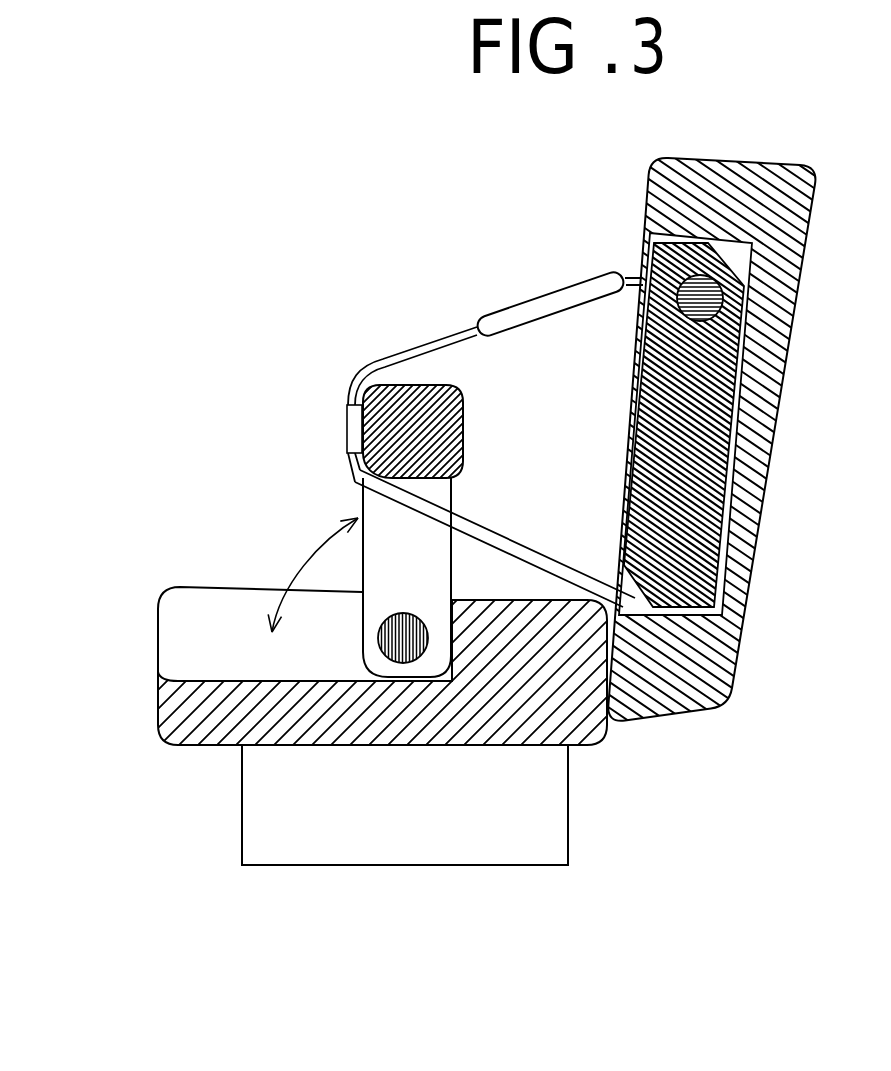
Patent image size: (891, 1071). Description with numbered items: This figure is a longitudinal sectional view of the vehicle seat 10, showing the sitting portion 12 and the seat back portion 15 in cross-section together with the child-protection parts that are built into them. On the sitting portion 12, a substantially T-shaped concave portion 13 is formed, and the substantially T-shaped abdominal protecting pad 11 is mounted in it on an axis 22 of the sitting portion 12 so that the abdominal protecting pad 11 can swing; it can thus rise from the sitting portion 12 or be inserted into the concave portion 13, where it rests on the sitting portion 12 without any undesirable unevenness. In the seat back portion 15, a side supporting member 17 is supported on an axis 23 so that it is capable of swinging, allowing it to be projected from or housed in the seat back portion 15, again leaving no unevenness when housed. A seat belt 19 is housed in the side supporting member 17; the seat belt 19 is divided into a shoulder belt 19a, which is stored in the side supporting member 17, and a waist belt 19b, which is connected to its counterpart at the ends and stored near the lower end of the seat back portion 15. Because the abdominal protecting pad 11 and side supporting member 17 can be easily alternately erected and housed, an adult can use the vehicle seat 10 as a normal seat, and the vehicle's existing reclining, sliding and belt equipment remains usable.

The vehicle seat 10 is at (373, 262).
The abdominal protecting pad 11 is at (403, 407).
The sitting portion 12 is at (253, 587).
The concave portion 13 is at (213, 630).
The seat back portion 15 is at (647, 212).
The side supporting member 17 is at (675, 502).
The seat belt 19 is at (458, 328).
The shoulder belt 19a is at (558, 285).
The waist belt 19b is at (528, 545).
The axis 22 is at (423, 647).
The axis 23 is at (727, 280).